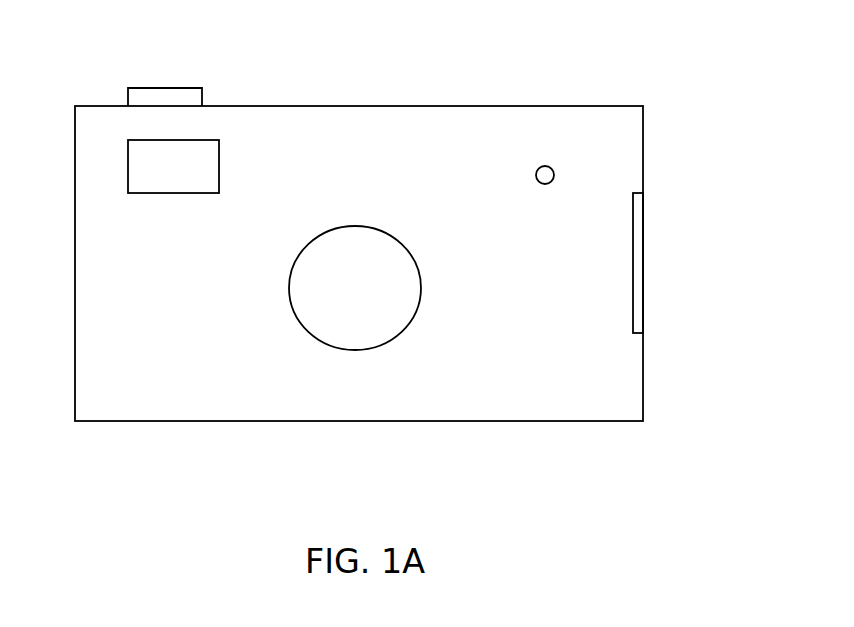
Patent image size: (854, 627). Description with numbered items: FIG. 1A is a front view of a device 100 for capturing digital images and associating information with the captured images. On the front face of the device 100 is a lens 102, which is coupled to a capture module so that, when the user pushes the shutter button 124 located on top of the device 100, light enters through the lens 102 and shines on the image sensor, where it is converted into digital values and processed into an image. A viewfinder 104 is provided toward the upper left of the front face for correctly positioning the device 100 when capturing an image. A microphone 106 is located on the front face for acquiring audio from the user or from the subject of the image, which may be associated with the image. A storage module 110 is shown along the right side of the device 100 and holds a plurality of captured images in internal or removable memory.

The device 100 is at (451, 92).
The lens 102 is at (350, 349).
The viewfinder 104 is at (128, 168).
The microphone 106 is at (544, 184).
The storage module 110 is at (643, 246).
The shutter button 124 is at (205, 93).